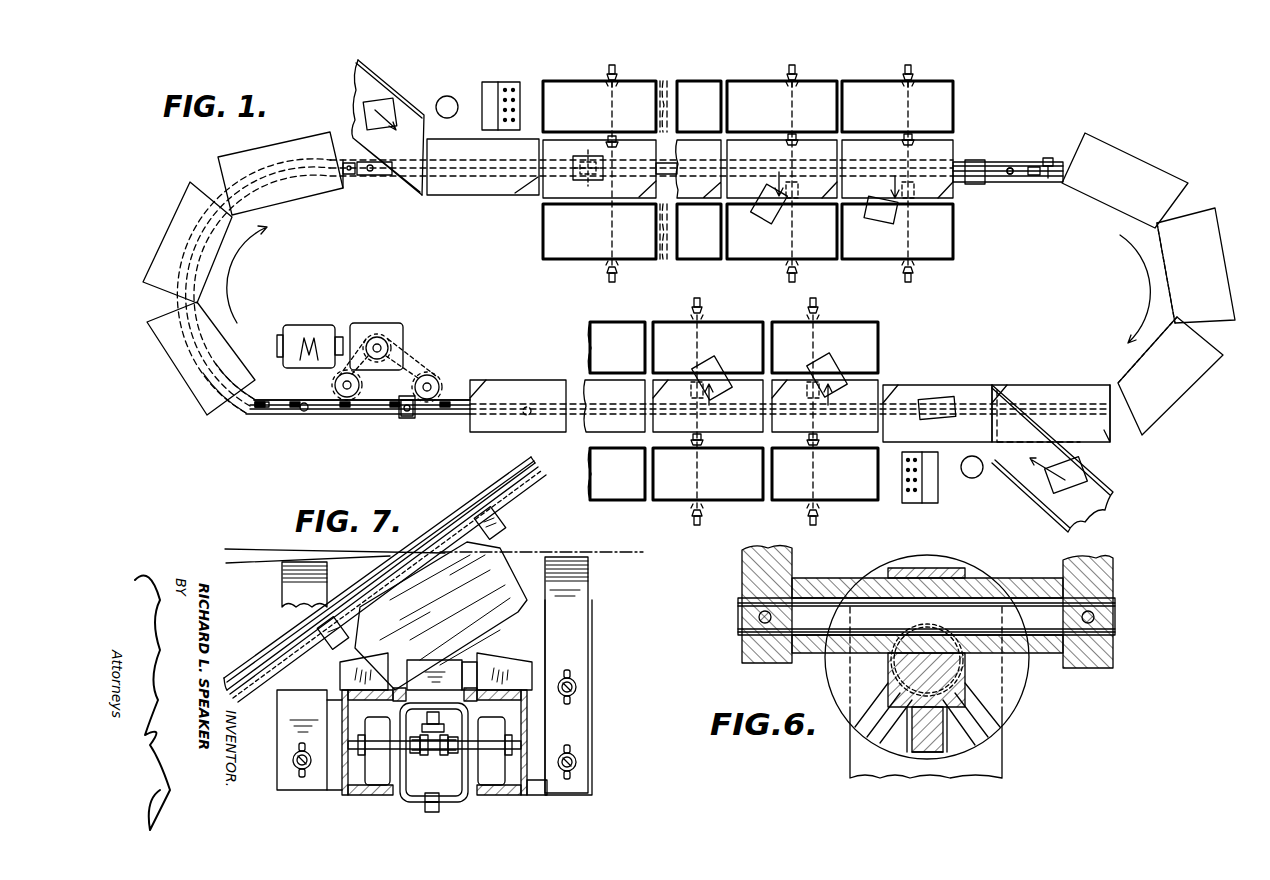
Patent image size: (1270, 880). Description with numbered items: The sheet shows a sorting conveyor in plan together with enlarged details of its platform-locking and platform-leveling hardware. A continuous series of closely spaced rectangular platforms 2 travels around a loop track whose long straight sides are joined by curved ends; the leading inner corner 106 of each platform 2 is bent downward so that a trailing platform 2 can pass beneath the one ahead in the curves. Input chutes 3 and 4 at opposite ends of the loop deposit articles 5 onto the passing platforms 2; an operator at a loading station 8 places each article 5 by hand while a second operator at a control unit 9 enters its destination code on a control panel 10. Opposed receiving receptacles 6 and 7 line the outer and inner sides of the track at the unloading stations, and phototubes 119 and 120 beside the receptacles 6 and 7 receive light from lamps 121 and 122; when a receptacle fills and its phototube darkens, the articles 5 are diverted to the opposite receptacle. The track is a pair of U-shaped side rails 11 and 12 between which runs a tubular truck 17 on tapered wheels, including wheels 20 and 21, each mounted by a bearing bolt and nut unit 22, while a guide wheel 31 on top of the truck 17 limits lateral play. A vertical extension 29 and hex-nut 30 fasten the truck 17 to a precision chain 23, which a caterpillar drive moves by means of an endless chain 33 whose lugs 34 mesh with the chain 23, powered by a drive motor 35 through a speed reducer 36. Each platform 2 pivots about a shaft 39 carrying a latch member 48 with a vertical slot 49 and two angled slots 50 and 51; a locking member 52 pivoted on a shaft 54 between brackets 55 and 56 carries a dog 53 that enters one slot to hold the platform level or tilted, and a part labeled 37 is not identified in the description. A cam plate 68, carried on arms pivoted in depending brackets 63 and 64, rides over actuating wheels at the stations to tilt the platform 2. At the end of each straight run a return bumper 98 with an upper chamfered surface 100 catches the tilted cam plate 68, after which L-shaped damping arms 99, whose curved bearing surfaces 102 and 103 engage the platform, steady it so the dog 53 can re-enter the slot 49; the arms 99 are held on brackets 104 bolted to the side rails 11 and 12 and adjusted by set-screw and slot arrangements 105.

In FIG. 1, the platform 2 is at (210, 180).
In FIG. 7, the platform 2 is at (456, 520).
In FIG. 1, the input chute 3 is at (392, 82).
In FIG. 1, the input chute 4 is at (1092, 475).
In FIG. 1, the article 5 is at (390, 124).
In FIG. 1, the receiving receptacle 6 is at (715, 72).
In FIG. 1, the receiving receptacle 7 is at (754, 262).
In FIG. 1, the loading station 8 is at (445, 100).
In FIG. 1, the control unit 9 is at (488, 82).
In FIG. 1, the control panel 10 is at (512, 84).
In FIG. 1, the side rail 11 is at (272, 400).
In FIG. 7, the side rail 11 is at (344, 795).
In FIG. 1, the side rail 12 is at (358, 420).
In FIG. 7, the side rail 12 is at (521, 792).
In FIG. 1, the tubular truck 17 is at (386, 176).
In FIG. 7, the tubular truck 17 is at (400, 796).
In FIG. 7, the supporting wheel 20 is at (492, 726).
In FIG. 7, the supporting wheel 21 is at (380, 720).
In FIG. 7, the bearing bolt and nut unit 22 is at (452, 769).
In FIG. 1, the precision chain 23 is at (262, 410).
In FIG. 7, the vertical extension 29 is at (440, 808).
In FIG. 7, the hex-nut 30 is at (432, 800).
In FIG. 1, the guide wheel 31 is at (304, 403).
In FIG. 7, the guide wheel 31 is at (472, 700).
In FIG. 1, the endless chain 33 is at (390, 365).
In FIG. 1, the lug 34 is at (430, 374).
In FIG. 1, the drive motor 35 is at (320, 326).
In FIG. 1, the speed reducer 36 is at (376, 323).
In FIG. 6, the support plate 37 is at (1002, 774).
In FIG. 7, the shaft 39 is at (468, 662).
In FIG. 6, the shaft 39 is at (955, 620).
In FIG. 6, the latch member 48 is at (1022, 686).
In FIG. 6, the slot 49 is at (920, 778).
In FIG. 6, the slot 50 is at (870, 745).
In FIG. 6, the slot 51 is at (995, 725).
In FIG. 6, the locking member 52 is at (940, 568).
In FIG. 6, the dog 53 is at (932, 748).
In FIG. 6, the shaft 54 is at (1115, 620).
In FIG. 6, the bracket 55 is at (1113, 580).
In FIG. 6, the bracket 56 is at (742, 580).
In FIG. 7, the depending bracket 63 is at (497, 508).
In FIG. 7, the depending bracket 64 is at (333, 640).
In FIG. 7, the cam plate 68 is at (505, 562).
In FIG. 1, the return bumper 98 is at (980, 158).
In FIG. 7, the return bumper 98 is at (390, 670).
In FIG. 1, the damping arm 99 is at (338, 420).
In FIG. 7, the damping arm 99 is at (282, 592).
In FIG. 7, the upper chamfered surface 100 is at (355, 664).
In FIG. 7, the curved bearing surface 102 is at (298, 556).
In FIG. 7, the curved bearing surface 103 is at (569, 552).
In FIG. 7, the bracket 104 is at (592, 740).
In FIG. 7, the set-screw and slot arrangement 105 is at (583, 694).
In FIG. 1, the leading inner edge 106 is at (343, 188).
In FIG. 7, the leading inner edge 106 is at (275, 653).
In FIG. 1, the phototube 119 is at (902, 138).
In FIG. 1, the phototube 120 is at (799, 186).
In FIG. 1, the lamp 121 is at (608, 70).
In FIG. 1, the lamp 122 is at (692, 300).